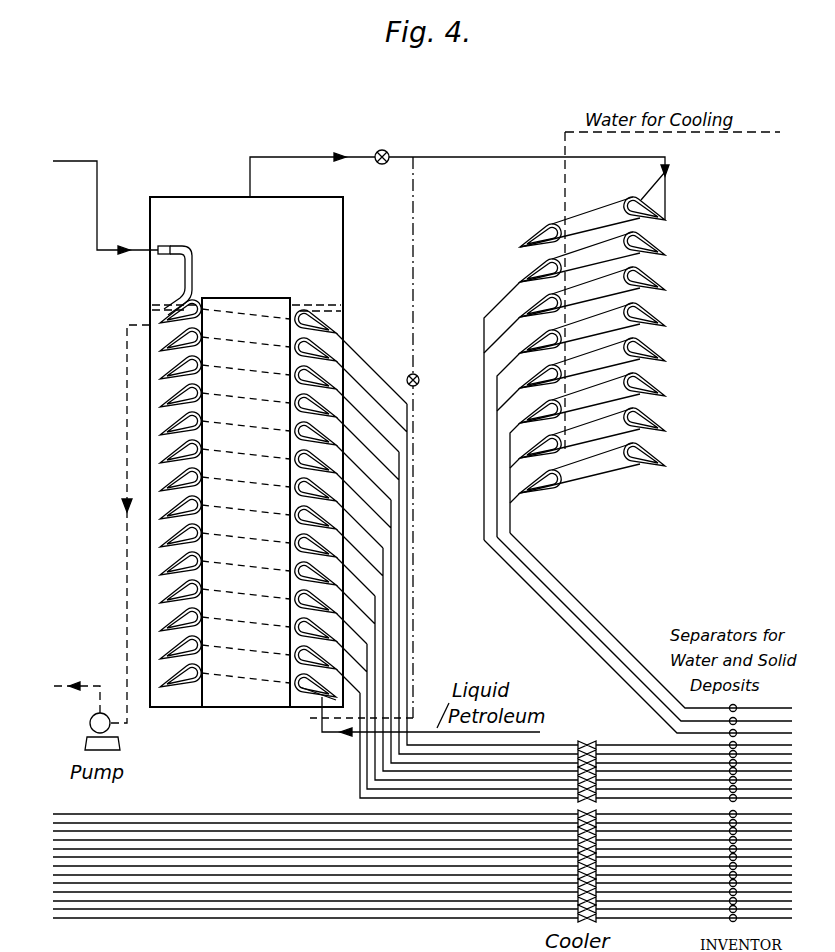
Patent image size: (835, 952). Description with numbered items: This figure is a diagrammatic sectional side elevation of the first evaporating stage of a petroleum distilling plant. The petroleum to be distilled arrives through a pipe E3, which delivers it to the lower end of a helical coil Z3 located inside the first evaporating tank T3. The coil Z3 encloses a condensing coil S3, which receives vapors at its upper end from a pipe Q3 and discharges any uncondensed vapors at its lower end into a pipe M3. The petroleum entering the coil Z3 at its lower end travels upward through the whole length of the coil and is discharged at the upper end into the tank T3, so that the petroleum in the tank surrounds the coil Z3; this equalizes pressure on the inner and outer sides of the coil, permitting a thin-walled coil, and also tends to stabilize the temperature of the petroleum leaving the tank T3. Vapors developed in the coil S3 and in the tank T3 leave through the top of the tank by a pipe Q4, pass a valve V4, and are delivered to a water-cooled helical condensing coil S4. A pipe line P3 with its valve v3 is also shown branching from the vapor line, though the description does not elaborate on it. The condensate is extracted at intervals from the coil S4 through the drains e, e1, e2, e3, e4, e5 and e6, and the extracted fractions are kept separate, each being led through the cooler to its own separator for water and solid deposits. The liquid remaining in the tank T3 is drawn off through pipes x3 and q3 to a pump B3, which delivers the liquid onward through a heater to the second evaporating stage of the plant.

The pipe Q3 is at (80, 158).
The pipe Q4 is at (320, 157).
The valve V4 is at (384, 147).
The helical condensing coil S4 is at (594, 210).
The first evaporating tank T3 is at (246, 452).
The helical coil Z3 is at (304, 317).
The condensing coil S3 is at (328, 318).
The pipe x3 is at (127, 325).
The pipe q3 is at (122, 548).
The pump B3 is at (96, 720).
The pipe M3 is at (311, 710).
The pipe E3 is at (328, 736).
The pipe line P3 is at (418, 498).
The valve v3 is at (420, 381).
The drain e is at (508, 300).
The drain e1 is at (498, 340).
The drain e2 is at (506, 372).
The drain e3 is at (513, 398).
The drain e4 is at (516, 428).
The drain e5 is at (520, 464).
The drain e6 is at (527, 490).